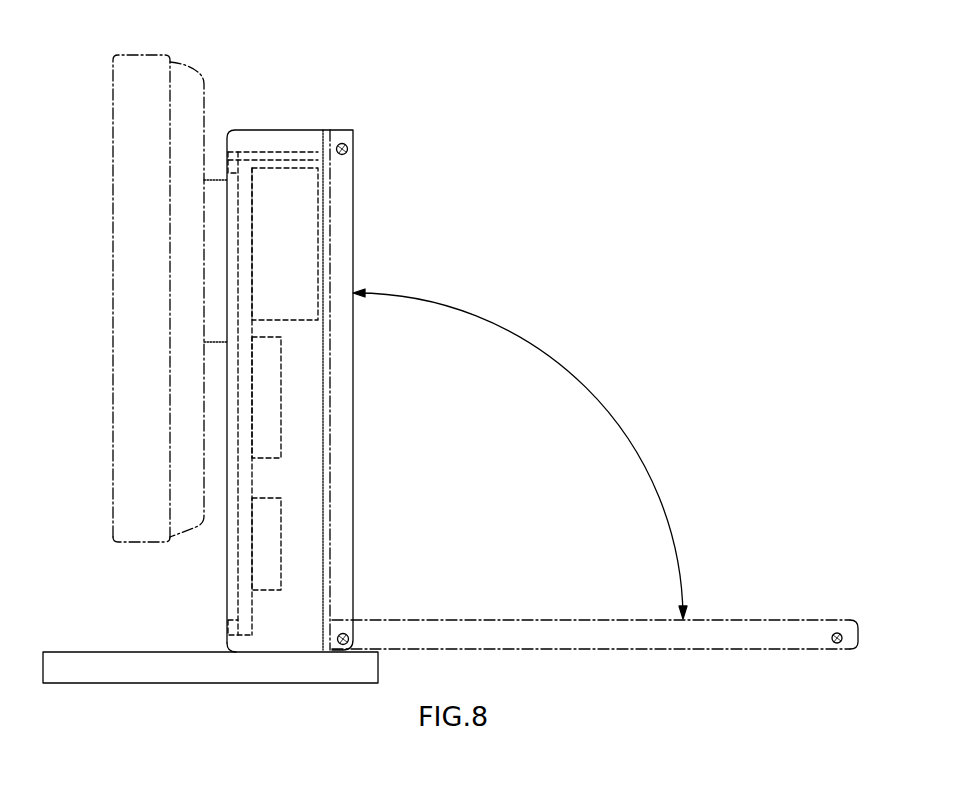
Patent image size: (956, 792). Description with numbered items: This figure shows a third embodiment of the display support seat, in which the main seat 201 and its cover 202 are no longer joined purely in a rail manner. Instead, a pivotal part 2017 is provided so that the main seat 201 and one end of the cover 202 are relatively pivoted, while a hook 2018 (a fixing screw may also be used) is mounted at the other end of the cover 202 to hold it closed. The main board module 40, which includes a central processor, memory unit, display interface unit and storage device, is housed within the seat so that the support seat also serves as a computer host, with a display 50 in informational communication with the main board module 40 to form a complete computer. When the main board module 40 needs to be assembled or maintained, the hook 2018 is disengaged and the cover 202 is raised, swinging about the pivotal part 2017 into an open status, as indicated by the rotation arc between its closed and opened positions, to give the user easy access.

The main board module 40 is at (238, 172).
The display 50 is at (130, 308).
The main seat 201 is at (273, 142).
The cover 202 is at (345, 246).
The pivotal part 2017 is at (346, 634).
The hook 2018 is at (346, 143).